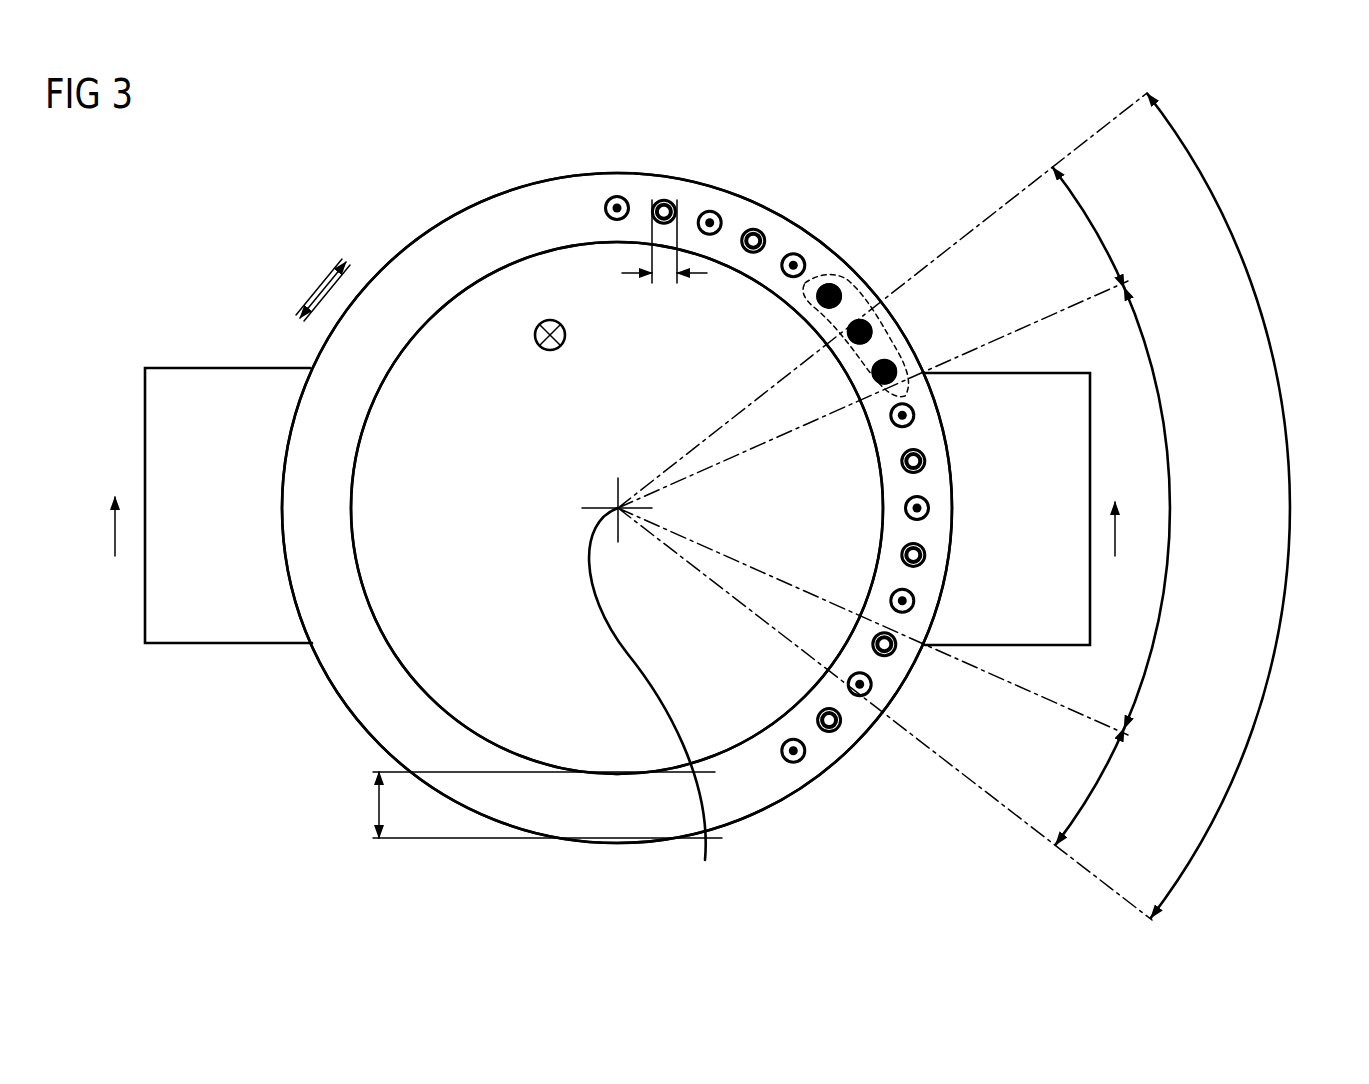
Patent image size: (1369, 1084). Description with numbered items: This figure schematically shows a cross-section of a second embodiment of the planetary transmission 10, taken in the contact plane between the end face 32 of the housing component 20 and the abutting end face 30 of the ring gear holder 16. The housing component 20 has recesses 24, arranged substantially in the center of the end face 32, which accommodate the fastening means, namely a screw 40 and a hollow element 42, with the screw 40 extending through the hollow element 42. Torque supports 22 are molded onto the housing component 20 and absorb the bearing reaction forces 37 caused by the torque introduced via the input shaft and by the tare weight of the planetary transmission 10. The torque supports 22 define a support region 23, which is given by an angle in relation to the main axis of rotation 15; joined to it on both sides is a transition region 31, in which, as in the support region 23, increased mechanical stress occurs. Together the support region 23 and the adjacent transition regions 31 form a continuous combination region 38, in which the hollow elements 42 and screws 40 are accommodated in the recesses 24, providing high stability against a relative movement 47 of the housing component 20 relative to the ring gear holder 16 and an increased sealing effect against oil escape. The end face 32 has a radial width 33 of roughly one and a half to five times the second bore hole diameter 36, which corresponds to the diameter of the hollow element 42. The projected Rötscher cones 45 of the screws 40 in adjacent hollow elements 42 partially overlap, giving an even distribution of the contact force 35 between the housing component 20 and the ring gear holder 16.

The planetary transmission 10 is at (280, 156).
The main axis of rotation 15 is at (648, 690).
The ring gear holder 16 is at (403, 248).
The housing component 20 is at (617, 508).
The torque supports 22 is at (208, 368).
The support region 23 is at (1172, 505).
The recesses 24 is at (615, 197).
The end face of the ring gear holder 30 is at (464, 248).
The transition region 31 is at (1093, 226).
The end face of the housing component 32 is at (617, 508).
The radial width 33 is at (376, 808).
The contact force 35 is at (549, 320).
The second bore hole diameter 36 is at (663, 282).
The bearing reaction forces 37 is at (112, 535).
The combination region 38 is at (1290, 505).
The screw 40 is at (620, 198).
The hollow element 42 is at (668, 202).
The Rötscher cones 45 is at (815, 290).
The relative movement 47 is at (322, 298).